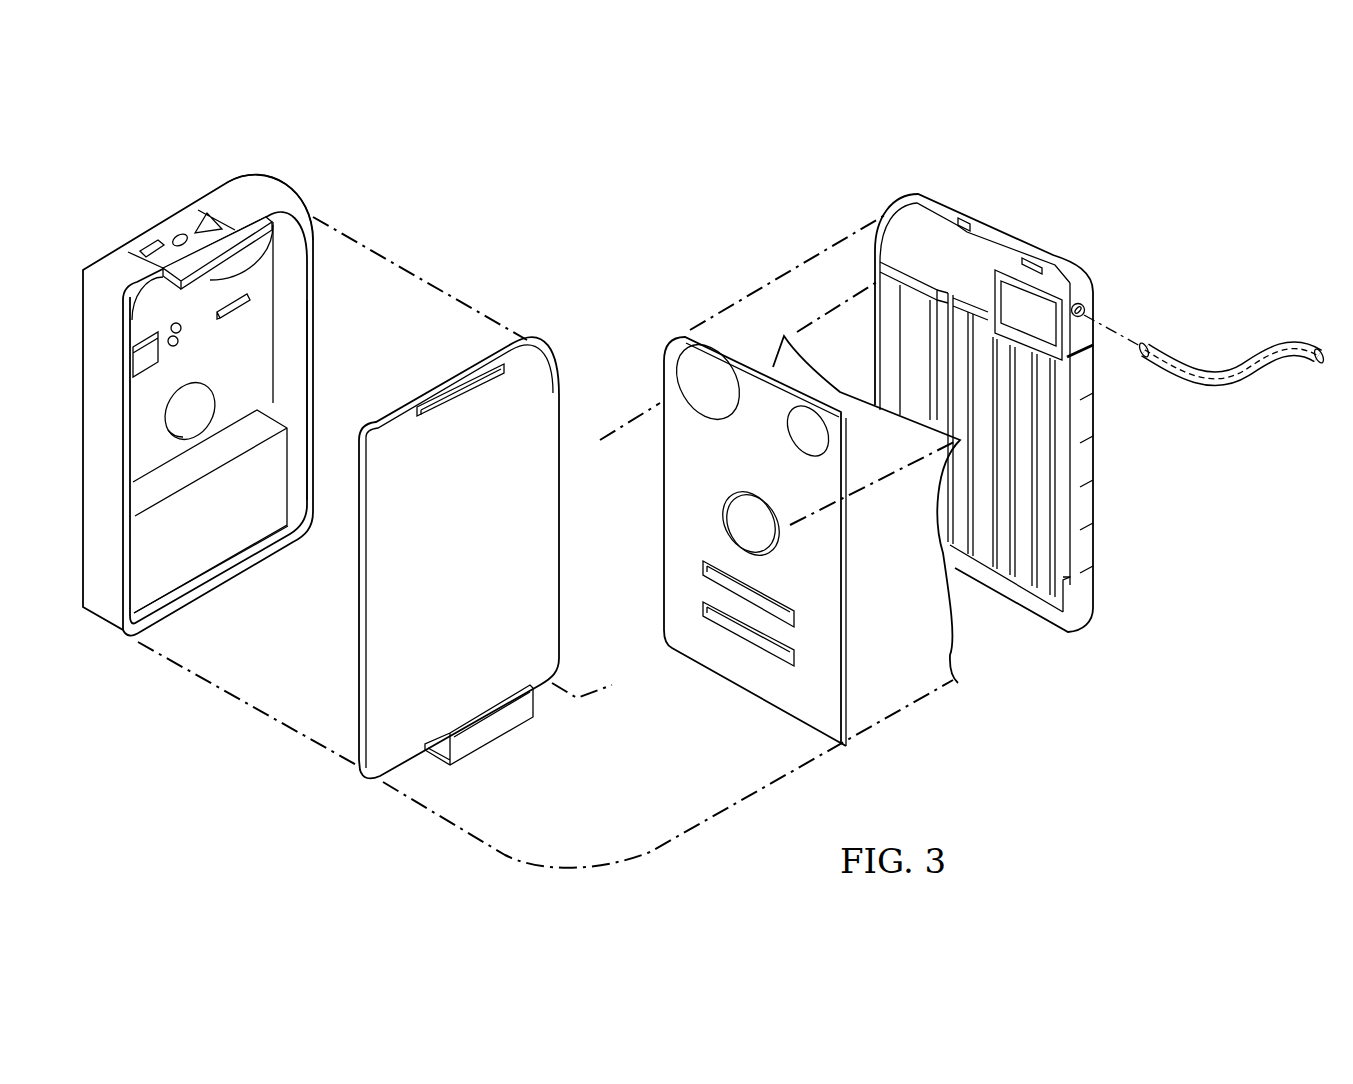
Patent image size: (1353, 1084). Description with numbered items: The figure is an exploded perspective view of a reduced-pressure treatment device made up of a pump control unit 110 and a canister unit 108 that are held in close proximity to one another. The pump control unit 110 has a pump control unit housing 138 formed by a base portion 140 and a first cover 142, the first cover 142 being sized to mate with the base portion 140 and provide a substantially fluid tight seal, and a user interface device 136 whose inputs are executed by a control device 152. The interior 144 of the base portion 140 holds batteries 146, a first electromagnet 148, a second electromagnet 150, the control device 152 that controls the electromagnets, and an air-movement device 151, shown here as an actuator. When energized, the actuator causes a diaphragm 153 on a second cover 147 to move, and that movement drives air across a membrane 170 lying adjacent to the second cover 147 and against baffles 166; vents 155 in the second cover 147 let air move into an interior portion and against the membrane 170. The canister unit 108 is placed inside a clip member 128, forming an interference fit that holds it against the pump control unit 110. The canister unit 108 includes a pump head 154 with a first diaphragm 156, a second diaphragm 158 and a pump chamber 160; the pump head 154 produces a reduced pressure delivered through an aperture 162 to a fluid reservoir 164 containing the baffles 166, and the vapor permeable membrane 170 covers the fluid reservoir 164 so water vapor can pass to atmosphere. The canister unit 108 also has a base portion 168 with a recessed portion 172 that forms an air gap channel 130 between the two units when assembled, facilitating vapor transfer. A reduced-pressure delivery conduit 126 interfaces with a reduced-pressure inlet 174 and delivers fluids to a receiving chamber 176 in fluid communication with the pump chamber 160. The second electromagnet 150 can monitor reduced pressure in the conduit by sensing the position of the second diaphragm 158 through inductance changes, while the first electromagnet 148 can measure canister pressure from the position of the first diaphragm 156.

The canister unit 108 is at (1010, 236).
The pump control unit 110 is at (240, 183).
The reduced-pressure delivery conduit 126 is at (1280, 343).
The clip member 128 is at (497, 729).
The air gap channel 130 is at (1067, 505).
The user interface device 136 is at (172, 224).
The pump control unit housing 138 is at (316, 243).
The base portion 140 is at (317, 387).
The first cover 142 is at (548, 396).
The interior 144 is at (262, 330).
The batteries 146 is at (231, 548).
The second cover 147 is at (665, 590).
The first electromagnet 148 is at (252, 263).
The second electromagnet 150 is at (143, 297).
The air-movement device 151 is at (207, 402).
The control device 152 is at (248, 302).
The diaphragm 153 is at (736, 500).
The pump head 154 is at (908, 230).
The vents 155 is at (785, 607).
The first diaphragm 156 is at (686, 357).
The second diaphragm 158 is at (801, 437).
The pump chamber 160 is at (923, 230).
The aperture 162 is at (953, 303).
The fluid reservoir 164 is at (963, 377).
The baffles 166 is at (990, 563).
The base portion 168 is at (1095, 452).
The membrane 170 is at (931, 655).
The recessed portion 172 is at (1062, 572).
The reduced-pressure inlet 174 is at (1088, 310).
The receiving chamber 176 is at (1047, 327).